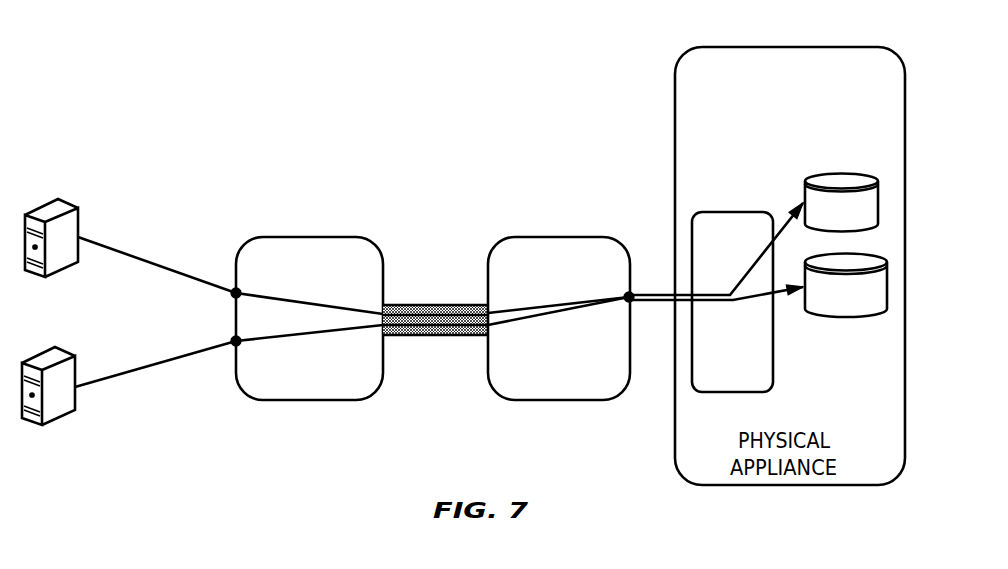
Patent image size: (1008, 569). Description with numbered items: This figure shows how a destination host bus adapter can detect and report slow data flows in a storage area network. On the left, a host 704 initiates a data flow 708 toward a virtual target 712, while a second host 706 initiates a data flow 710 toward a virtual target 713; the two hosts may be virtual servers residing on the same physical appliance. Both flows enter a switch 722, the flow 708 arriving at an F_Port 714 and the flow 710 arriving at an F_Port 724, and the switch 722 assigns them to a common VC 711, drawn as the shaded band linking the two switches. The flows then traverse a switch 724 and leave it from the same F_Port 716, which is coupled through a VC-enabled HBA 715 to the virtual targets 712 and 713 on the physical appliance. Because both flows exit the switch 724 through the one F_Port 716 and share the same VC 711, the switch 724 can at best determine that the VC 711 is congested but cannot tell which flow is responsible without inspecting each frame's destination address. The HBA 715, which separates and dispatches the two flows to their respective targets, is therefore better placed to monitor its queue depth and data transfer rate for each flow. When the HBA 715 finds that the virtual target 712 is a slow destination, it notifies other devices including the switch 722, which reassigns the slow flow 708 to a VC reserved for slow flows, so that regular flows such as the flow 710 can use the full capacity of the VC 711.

The host 704 is at (45, 205).
The host 706 is at (30, 362).
The data flow 708 is at (258, 292).
The data flow 710 is at (258, 340).
The VC 711 is at (395, 305).
The virtual target 712 is at (871, 173).
The virtual target 713 is at (884, 313).
The F_Port 714 is at (234, 291).
The VC-enabled HBA 715 is at (732, 302).
The F_Port 716 is at (626, 294).
The switch 722 is at (309, 319).
The switch / F_Port 724 is at (224, 383).